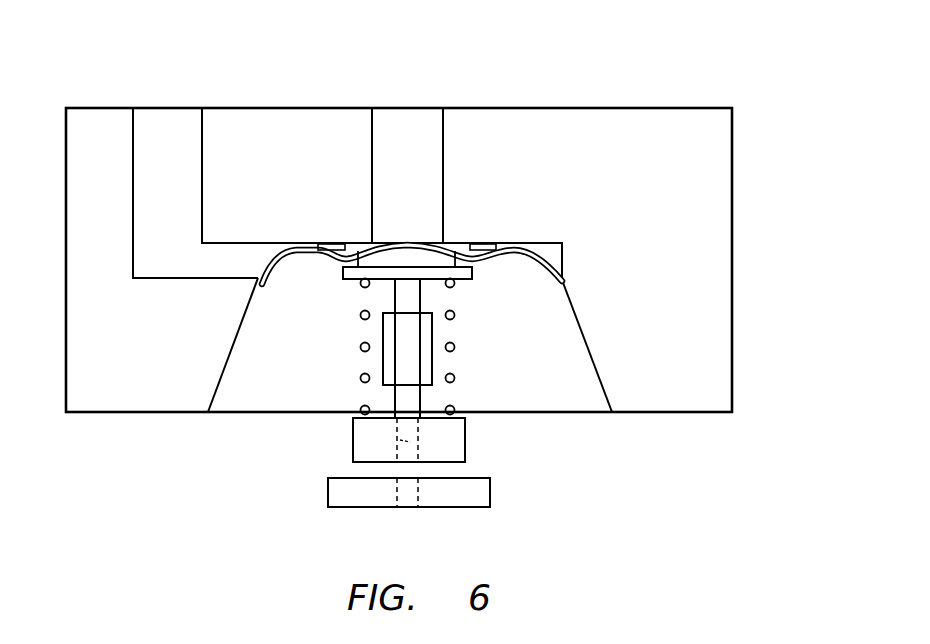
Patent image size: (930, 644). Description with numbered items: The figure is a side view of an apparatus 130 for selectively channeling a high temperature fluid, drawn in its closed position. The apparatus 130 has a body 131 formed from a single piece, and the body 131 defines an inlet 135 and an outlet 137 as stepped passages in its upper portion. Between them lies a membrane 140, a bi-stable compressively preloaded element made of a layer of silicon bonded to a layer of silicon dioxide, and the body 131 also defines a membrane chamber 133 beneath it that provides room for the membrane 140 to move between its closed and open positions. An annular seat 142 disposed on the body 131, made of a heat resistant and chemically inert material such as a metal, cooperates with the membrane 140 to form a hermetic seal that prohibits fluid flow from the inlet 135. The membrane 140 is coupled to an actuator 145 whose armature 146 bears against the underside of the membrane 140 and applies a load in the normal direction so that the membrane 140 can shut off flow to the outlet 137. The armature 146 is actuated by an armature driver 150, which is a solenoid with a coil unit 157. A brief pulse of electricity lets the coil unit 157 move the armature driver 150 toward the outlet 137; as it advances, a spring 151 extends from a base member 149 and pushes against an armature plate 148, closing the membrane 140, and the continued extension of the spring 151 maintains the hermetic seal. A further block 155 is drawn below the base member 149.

The apparatus 130 is at (750, 48).
The body 131 is at (717, 220).
The membrane chamber 133 is at (570, 400).
The inlet 135 is at (184, 161).
The outlet 137 is at (427, 162).
The membrane 140 is at (277, 279).
The annular seat 142 is at (332, 243).
The actuator 145 is at (272, 392).
The armature 146 is at (387, 262).
The armature plate 148 is at (474, 273).
The base member 149 is at (452, 443).
The armature driver 150 is at (410, 373).
The spring 151 is at (361, 407).
The magnet 155 is at (477, 495).
The coil unit 157 is at (382, 366).